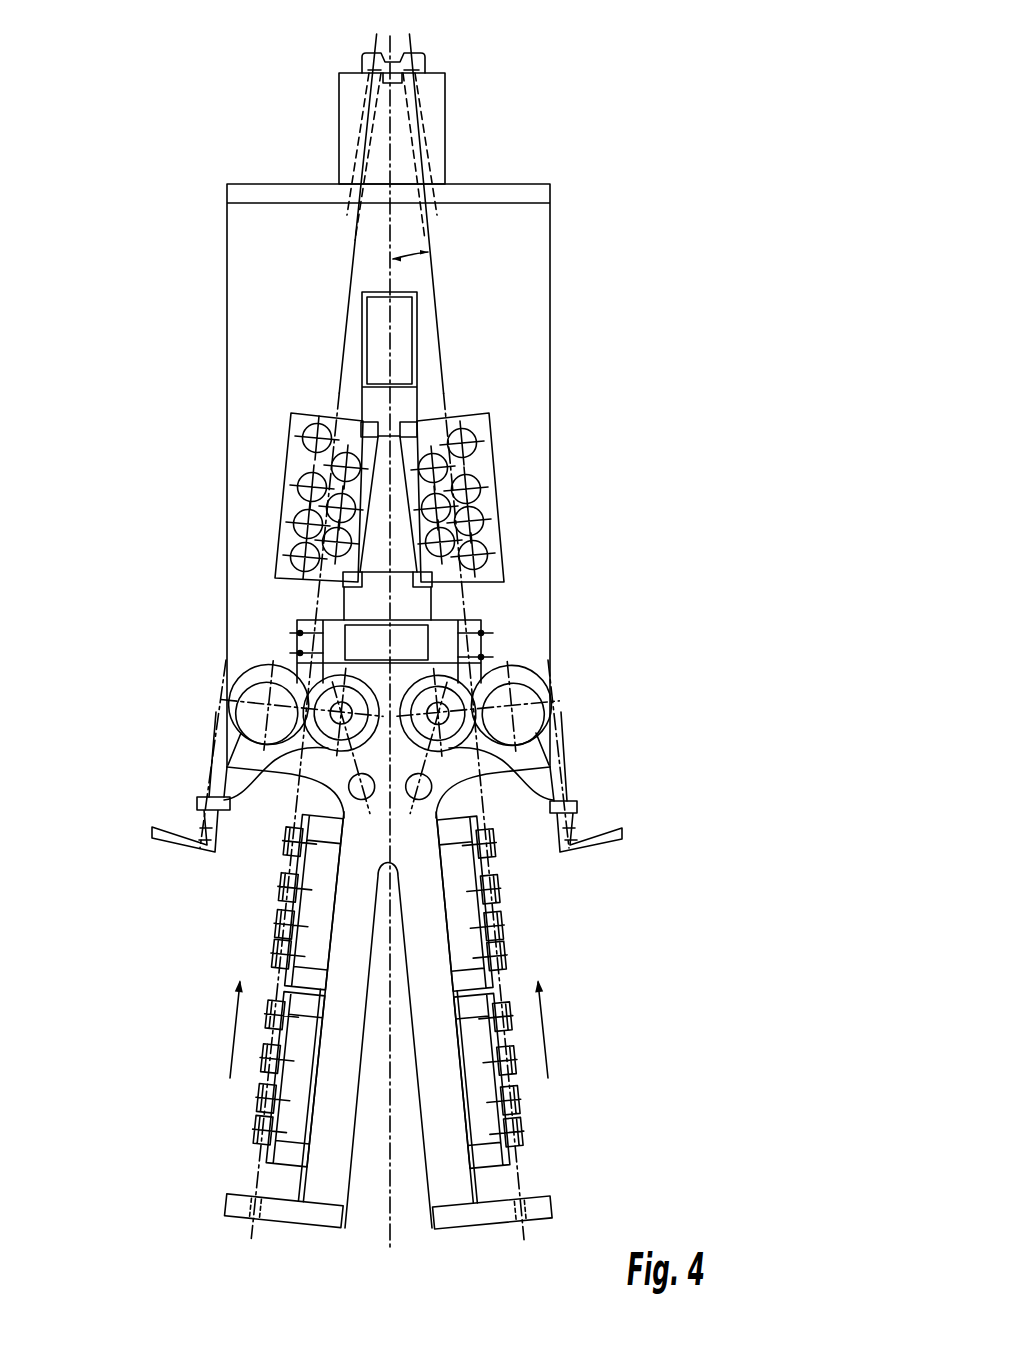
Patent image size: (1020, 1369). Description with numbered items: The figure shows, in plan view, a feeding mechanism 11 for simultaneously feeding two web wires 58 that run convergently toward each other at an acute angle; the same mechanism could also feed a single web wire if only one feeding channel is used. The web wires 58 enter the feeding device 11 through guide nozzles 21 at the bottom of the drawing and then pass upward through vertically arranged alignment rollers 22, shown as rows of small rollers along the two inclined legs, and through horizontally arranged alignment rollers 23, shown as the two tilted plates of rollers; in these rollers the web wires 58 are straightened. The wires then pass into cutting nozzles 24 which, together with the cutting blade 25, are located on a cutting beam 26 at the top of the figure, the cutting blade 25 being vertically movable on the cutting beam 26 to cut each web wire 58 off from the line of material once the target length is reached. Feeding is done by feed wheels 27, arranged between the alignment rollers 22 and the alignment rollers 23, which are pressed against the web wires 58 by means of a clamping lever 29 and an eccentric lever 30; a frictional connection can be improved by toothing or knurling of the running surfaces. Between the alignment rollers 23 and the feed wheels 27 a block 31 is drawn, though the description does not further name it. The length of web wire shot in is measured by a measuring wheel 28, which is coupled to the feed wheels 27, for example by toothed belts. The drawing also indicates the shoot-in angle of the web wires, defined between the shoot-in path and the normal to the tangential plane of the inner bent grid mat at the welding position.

The feeding mechanism 11 is at (242, 860).
The guide nozzle 21 is at (550, 1200).
The vertically arranged alignment rollers 22 is at (523, 1102).
The horizontally arranged alignment rollers 23 is at (486, 468).
The cutting nozzle 24 is at (426, 150).
The cutting blade 25 is at (418, 52).
The cutting beam 26 is at (438, 101).
The feed wheel 27 is at (521, 697).
The measuring wheel 28 is at (442, 788).
The clamping lever 29 is at (151, 838).
The eccentric lever 30 is at (214, 757).
The roller carrier 31 is at (292, 622).
The web wire 58 is at (517, 1238).